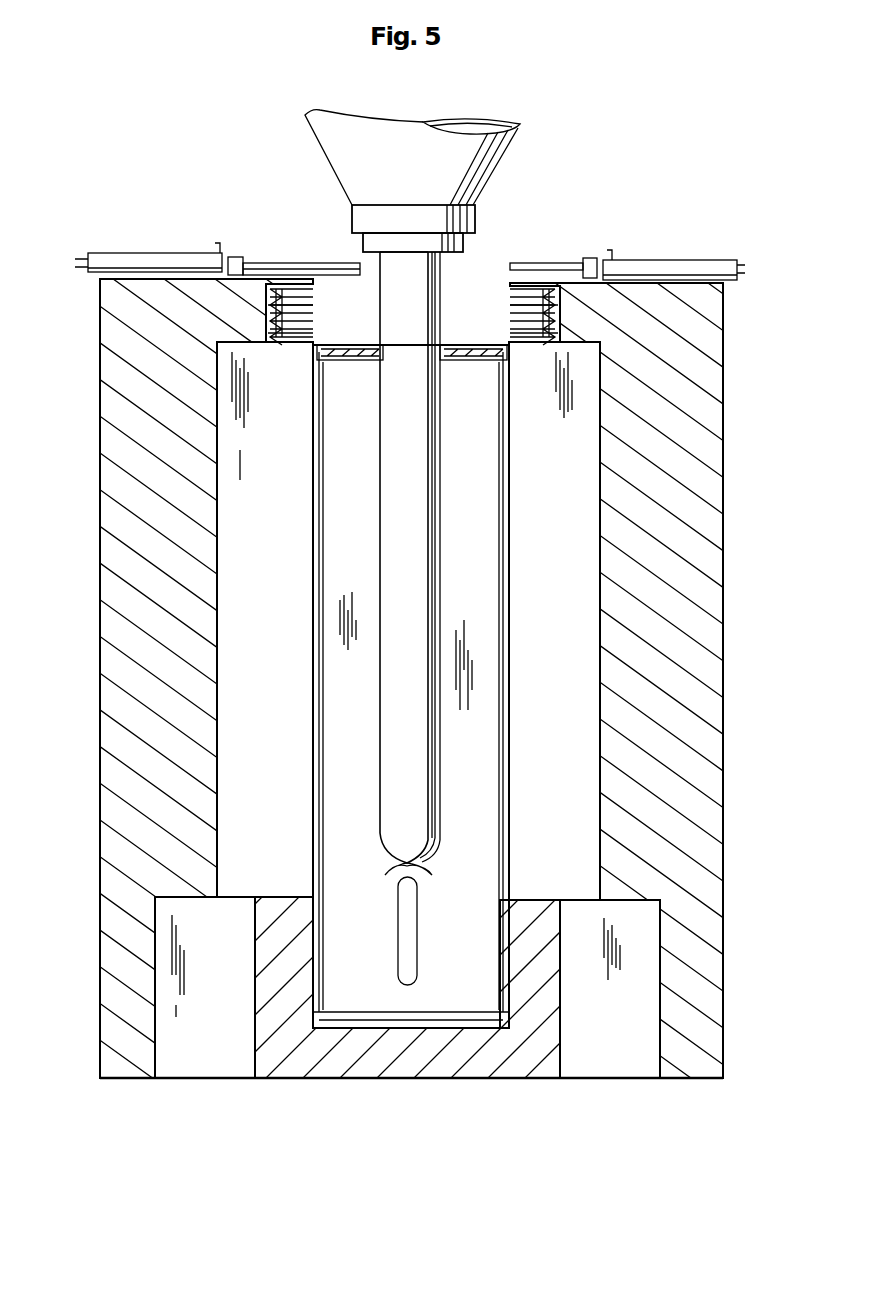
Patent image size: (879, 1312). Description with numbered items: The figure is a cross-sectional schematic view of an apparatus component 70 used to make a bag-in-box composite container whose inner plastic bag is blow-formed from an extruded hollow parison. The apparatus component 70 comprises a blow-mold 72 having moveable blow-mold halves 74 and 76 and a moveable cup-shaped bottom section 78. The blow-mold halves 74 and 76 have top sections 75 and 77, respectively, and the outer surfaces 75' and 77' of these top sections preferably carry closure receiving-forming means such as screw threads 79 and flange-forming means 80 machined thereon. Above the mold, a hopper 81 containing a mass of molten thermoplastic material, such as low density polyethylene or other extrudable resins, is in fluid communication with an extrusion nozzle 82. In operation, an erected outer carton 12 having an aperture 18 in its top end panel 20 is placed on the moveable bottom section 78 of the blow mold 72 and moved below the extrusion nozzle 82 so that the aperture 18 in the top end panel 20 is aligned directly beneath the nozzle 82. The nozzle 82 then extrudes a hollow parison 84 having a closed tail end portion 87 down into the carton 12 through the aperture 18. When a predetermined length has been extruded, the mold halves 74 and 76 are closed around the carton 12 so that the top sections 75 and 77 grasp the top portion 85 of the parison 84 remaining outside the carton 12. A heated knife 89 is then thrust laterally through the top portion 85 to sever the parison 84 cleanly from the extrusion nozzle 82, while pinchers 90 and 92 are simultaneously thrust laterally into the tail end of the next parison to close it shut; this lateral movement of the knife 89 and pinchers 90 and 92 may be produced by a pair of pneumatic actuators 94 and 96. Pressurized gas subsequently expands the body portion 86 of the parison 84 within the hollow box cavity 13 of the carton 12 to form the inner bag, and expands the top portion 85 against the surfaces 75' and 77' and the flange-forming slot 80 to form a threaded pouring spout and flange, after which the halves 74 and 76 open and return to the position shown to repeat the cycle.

The apparatus component 70 is at (559, 210).
The blow-mold 72 is at (158, 1094).
The blow-mold half 74 is at (135, 520).
The blow-mold half 76 is at (695, 530).
The bottom section 78 is at (482, 1080).
The hopper 81 is at (345, 160).
The extrusion nozzle 82 is at (368, 240).
The hollow parison 84 is at (405, 432).
The top portion 85 is at (418, 283).
The body portion 86 is at (400, 556).
The closed tail end portion 87 is at (405, 860).
The heated knife 89 is at (330, 268).
The pincher 90 is at (268, 262).
The pincher 92 is at (548, 265).
The pneumatic actuator 94 is at (125, 258).
The pneumatic actuator 96 is at (697, 262).
The top section 75 is at (221, 280).
The top section 77 is at (603, 283).
The outer surface 75' is at (322, 296).
The outer surface 77' is at (502, 293).
The screw threads 79 is at (268, 305).
The flange-forming means 80 is at (305, 335).
The outer carton 12 is at (498, 523).
The hollow box cavity 13 is at (475, 586).
The aperture 18 is at (450, 345).
The top end panel 20 is at (330, 350).